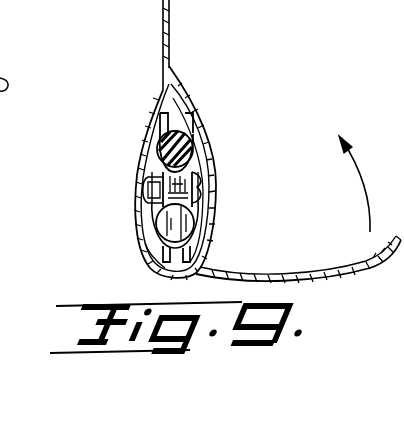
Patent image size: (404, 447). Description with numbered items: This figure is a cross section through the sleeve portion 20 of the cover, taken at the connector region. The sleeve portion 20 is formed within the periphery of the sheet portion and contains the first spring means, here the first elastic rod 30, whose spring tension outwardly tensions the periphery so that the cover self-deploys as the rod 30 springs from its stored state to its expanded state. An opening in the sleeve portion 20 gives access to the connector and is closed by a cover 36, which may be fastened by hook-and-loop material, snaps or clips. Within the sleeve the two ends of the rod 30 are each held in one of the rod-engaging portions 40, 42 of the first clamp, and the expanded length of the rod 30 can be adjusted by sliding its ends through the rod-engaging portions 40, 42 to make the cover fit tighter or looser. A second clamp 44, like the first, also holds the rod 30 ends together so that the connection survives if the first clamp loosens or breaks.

The sleeve portion 20 is at (199, 258).
The first elastic rod 30 is at (195, 148).
The cover 36 is at (157, 104).
The rod-engaging portion 40 is at (140, 253).
The rod-engaging portion 42 is at (197, 124).
The second clamp 44 is at (204, 165).